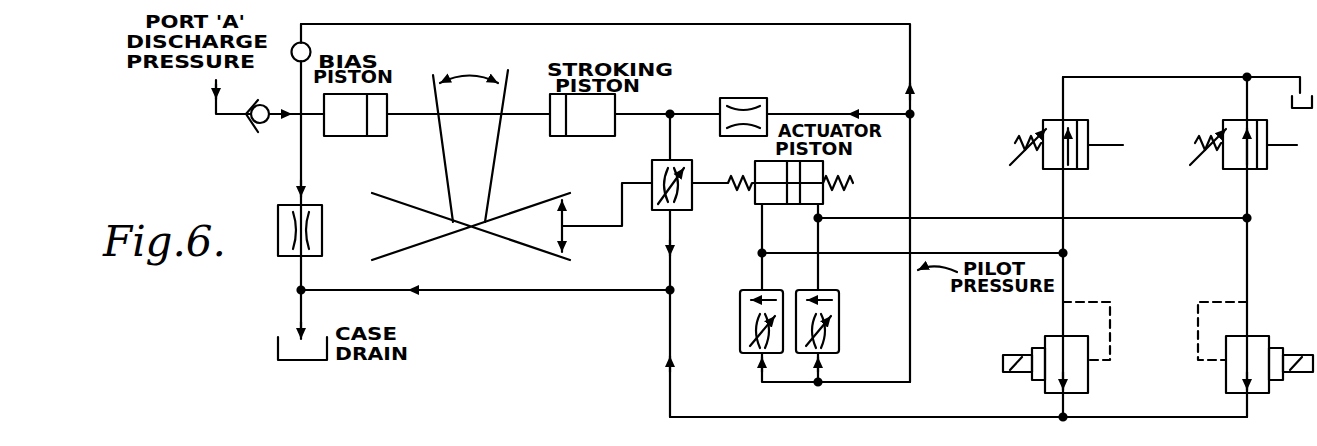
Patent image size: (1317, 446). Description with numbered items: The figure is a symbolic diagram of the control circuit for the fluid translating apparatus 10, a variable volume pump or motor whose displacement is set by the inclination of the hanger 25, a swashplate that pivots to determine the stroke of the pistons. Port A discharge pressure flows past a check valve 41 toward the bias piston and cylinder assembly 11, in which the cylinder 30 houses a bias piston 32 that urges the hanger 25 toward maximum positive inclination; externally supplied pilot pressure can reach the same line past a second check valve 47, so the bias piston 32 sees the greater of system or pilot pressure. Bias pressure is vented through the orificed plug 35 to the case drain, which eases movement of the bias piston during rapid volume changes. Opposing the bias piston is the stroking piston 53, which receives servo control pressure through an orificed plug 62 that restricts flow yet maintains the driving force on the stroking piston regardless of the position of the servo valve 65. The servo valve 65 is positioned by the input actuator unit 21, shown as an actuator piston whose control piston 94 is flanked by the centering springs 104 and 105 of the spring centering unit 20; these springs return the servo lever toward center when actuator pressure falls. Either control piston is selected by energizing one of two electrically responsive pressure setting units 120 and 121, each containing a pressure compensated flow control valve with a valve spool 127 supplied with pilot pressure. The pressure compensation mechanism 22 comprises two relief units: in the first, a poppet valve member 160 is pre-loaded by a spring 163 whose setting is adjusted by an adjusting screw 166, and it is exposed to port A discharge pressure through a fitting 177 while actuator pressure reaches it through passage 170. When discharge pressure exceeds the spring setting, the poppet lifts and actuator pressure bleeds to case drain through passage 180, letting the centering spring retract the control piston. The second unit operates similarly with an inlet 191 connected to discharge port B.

The fluid translating apparatus 10 is at (480, 244).
The bias piston and cylinder assembly 11 is at (401, 77).
The spring centering unit 20 is at (1018, 7).
The input actuator unit 21 is at (1214, 380).
The pressure compensation mechanism 22 is at (1210, 177).
The hanger 25 is at (480, 161).
The cylinder 30 is at (333, 137).
The bias piston 32 is at (368, 136).
The plug 35 is at (278, 255).
The check valve 41 is at (253, 125).
The check valve 47 is at (310, 45).
The stroking piston 53 is at (566, 137).
The plug 62 is at (750, 97).
The servo valve 65 is at (657, 212).
The control piston 94 is at (790, 207).
The spring 104 is at (723, 171).
The spring 105 is at (838, 188).
The electrically responsive pressure setting unit 120 is at (1046, 337).
The electrically responsive pressure setting unit 121 is at (1263, 338).
The valve spool 127 is at (736, 349).
The poppet valve member 160 is at (1088, 126).
The spring 163 is at (1032, 157).
The adjusting screw 166 is at (1040, 132).
The passage 170 is at (1062, 228).
The fitting 177 is at (1103, 146).
The passage 180 is at (1181, 76).
The inlet 191 is at (1292, 149).